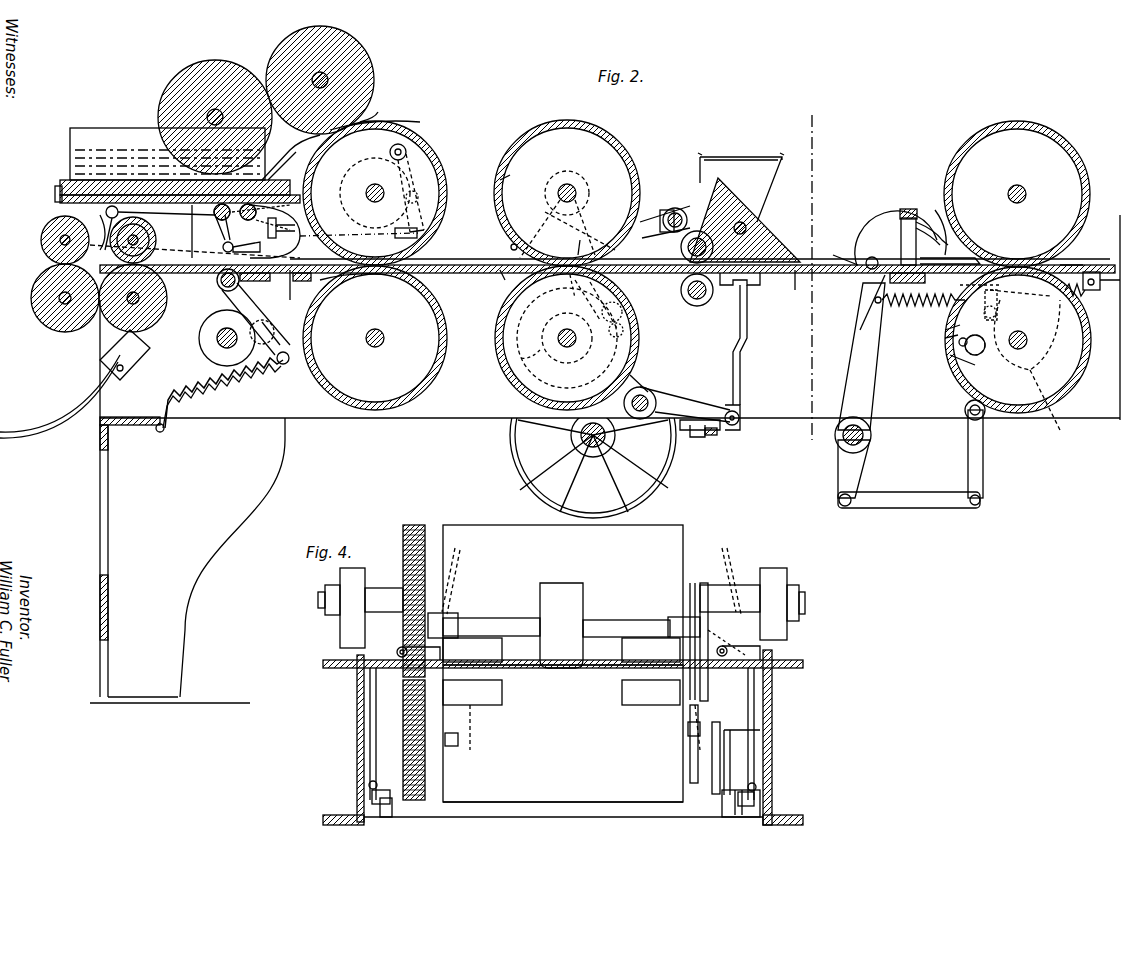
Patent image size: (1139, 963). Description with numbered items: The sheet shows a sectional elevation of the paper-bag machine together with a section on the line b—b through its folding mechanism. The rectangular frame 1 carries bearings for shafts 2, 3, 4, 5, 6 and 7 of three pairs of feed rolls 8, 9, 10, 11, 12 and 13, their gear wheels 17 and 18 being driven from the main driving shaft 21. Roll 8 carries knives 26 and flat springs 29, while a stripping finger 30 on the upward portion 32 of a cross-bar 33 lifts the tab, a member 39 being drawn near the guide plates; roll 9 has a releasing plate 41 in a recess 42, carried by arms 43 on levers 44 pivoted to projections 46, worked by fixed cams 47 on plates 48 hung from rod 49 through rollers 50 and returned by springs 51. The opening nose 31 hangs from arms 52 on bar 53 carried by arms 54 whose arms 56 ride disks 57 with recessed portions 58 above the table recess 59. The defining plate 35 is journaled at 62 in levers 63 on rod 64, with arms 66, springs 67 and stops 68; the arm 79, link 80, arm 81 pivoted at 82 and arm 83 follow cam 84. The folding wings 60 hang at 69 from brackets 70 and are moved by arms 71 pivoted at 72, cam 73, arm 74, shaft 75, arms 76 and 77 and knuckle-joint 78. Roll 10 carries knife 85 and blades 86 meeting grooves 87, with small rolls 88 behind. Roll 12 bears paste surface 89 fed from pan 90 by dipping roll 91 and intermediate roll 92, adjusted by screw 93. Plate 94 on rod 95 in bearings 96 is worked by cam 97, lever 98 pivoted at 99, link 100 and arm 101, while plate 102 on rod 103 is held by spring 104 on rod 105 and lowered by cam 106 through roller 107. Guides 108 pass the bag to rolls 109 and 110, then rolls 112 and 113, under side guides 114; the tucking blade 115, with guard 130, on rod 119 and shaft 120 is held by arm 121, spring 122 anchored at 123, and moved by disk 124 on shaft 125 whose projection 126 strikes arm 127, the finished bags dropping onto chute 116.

In FIG. 2, the frame 1 is at (300, 405).
In FIG. 2, the shaft 2 is at (1026, 194).
In FIG. 2, the shaft 3 is at (1026, 338).
In FIG. 2, the shaft 4 is at (558, 193).
In FIG. 4, the shaft 4 is at (561, 608).
In FIG. 2, the shaft 5 is at (558, 338).
In FIG. 4, the shaft 5 is at (458, 740).
In FIG. 2, the shaft 6 is at (366, 193).
In FIG. 2, the shaft 7 is at (366, 338).
In FIG. 2, the feed roll 8 is at (1021, 194).
In FIG. 2, the feed roll 9 is at (1090, 348).
In FIG. 2, the feed roll 10 is at (600, 138).
In FIG. 4, the feed roll 10 is at (563, 595).
In FIG. 2, the feed roll 11 is at (637, 338).
In FIG. 4, the feed roll 11 is at (563, 733).
In FIG. 2, the feed roll 12 is at (405, 126).
In FIG. 2, the feed roll 13 is at (445, 333).
In FIG. 4, the gear wheel 17 is at (415, 526).
In FIG. 4, the gear wheel 18 is at (426, 773).
In FIG. 2, the main driving shaft 21 is at (612, 450).
In FIG. 2, the knives 26 is at (898, 385).
In FIG. 2, the flat springs 29 is at (950, 225).
In FIG. 2, the stripping finger 30 is at (966, 216).
In FIG. 2, the opening nose 31 is at (765, 210).
In FIG. 4, the opening nose 31 is at (561, 625).
In FIG. 2, the upwardly extending portion 32 is at (906, 202).
In FIG. 2, the cross-bar 33 is at (900, 241).
In FIG. 2, the defining plate 35 is at (840, 247).
In FIG. 2, the plate 39 is at (950, 252).
In FIG. 2, the releasing plate 41 is at (945, 330).
In FIG. 2, the recess 42 is at (945, 338).
In FIG. 2, the arms 43 is at (959, 344).
In FIG. 2, the levers 44 is at (998, 300).
In FIG. 2, the projections 46 is at (1004, 312).
In FIG. 2, the fixed cams 47 is at (1045, 298).
In FIG. 2, the plates 48 is at (1062, 262).
In FIG. 2, the rod 49 is at (1100, 290).
In FIG. 2, the rollers 50 is at (993, 283).
In FIG. 2, the springs 51 is at (973, 337).
In FIG. 2, the arms 52 is at (676, 212).
In FIG. 4, the arms 52 is at (430, 624).
In FIG. 2, the bar 53 is at (674, 210).
In FIG. 4, the bar 53 is at (622, 622).
In FIG. 2, the arms 54 is at (663, 218).
In FIG. 4, the arms 54 is at (704, 586).
In FIG. 2, the arms 56 is at (512, 247).
In FIG. 4, the arms 56 is at (710, 636).
In FIG. 2, the disks 57 is at (532, 350).
In FIG. 4, the disks 57 is at (690, 760).
In FIG. 2, the recessed portions 58 is at (648, 368).
In FIG. 2, the recess 59 is at (791, 283).
In FIG. 2, the folding wings 60 is at (738, 200).
In FIG. 4, the folding wings 60 is at (458, 566).
In FIG. 2, the journal 62 is at (872, 238).
In FIG. 2, the levers 63 is at (861, 390).
In FIG. 2, the shaft or rod 64 is at (866, 436).
In FIG. 2, the arms 66 is at (882, 280).
In FIG. 2, the springs 67 is at (902, 304).
In FIG. 2, the fixed stops 68 is at (925, 280).
In FIG. 4, the pivot 69 is at (400, 650).
In FIG. 4, the brackets 70 is at (330, 652).
In FIG. 2, the arms 71 is at (738, 338).
In FIG. 4, the arms 71 is at (370, 738).
In FIG. 2, the pivot 72 is at (720, 280).
In FIG. 2, the cam 73 is at (614, 340).
In FIG. 4, the cam 73 is at (715, 770).
In FIG. 2, the arm 74 is at (647, 390).
In FIG. 4, the arm 74 is at (712, 785).
In FIG. 2, the shaft 75 is at (680, 400).
In FIG. 4, the shaft 75 is at (603, 802).
In FIG. 2, the arm 76 is at (695, 430).
In FIG. 4, the arm 76 is at (735, 817).
In FIG. 4, the arm 77 is at (392, 816).
In FIG. 2, the knuckle-joint 78 is at (740, 422).
In FIG. 4, the knuckle-joint 78 is at (778, 796).
In FIG. 2, the arm 79 is at (842, 475).
In FIG. 2, the link 80 is at (918, 506).
In FIG. 2, the arm 81 is at (975, 468).
In FIG. 2, the pivot 82 is at (965, 410).
In FIG. 2, the arm 83 is at (960, 369).
In FIG. 2, the cam 84 is at (1053, 405).
In FIG. 2, the knife 85 is at (500, 180).
In FIG. 2, the blades 86 is at (580, 252).
In FIG. 2, the grooves 87 is at (503, 286).
In FIG. 2, the small rolls 88 is at (680, 250).
In FIG. 4, the small rolls 88 is at (561, 671).
In FIG. 2, the horseshoe-shaped engaging surface 89 is at (415, 121).
In FIG. 2, the paste pan 90 is at (180, 165).
In FIG. 2, the dipping roll 91 is at (158, 113).
In FIG. 2, the intermediate roll 92 is at (372, 86).
In FIG. 2, the screw 93 is at (58, 203).
In FIG. 2, the plate 94 is at (287, 285).
In FIG. 2, the rod 95 is at (211, 231).
In FIG. 2, the bearings 96 is at (171, 216).
In FIG. 2, the cam 97 is at (420, 175).
In FIG. 2, the lever 98 is at (420, 222).
In FIG. 2, the pivot 99 is at (406, 152).
In FIG. 2, the link 100 is at (289, 233).
In FIG. 2, the arm 101 is at (232, 247).
In FIG. 2, the plate 102 is at (303, 281).
In FIG. 2, the rod 103 is at (261, 216).
In FIG. 2, the spring 104 is at (291, 164).
In FIG. 2, the rod 105 is at (260, 282).
In FIG. 2, the cam or projection 106 is at (372, 118).
In FIG. 2, the roller 107 is at (318, 232).
In FIG. 2, the guides 108 is at (213, 280).
In FIG. 2, the roll 109 is at (186, 244).
In FIG. 2, the roll 110 is at (167, 298).
In FIG. 2, the roll 112 is at (41, 240).
In FIG. 2, the roll 113 is at (31, 298).
In FIG. 2, the side guides 114 is at (350, 284).
In FIG. 2, the tucking blade 115 is at (118, 255).
In FIG. 2, the delivery chute 116 is at (52, 410).
In FIG. 2, the rod 119 is at (155, 224).
In FIG. 2, the rod or shaft 120 is at (222, 290).
In FIG. 2, the arm 121 is at (280, 324).
In FIG. 2, the spring 122 is at (223, 393).
In FIG. 2, the anchor 123 is at (158, 432).
In FIG. 2, the disk 124 is at (200, 344).
In FIG. 2, the shaft 125 is at (229, 347).
In FIG. 2, the cam or projection 126 is at (280, 364).
In FIG. 2, the arm 127 is at (275, 333).
In FIG. 2, the guard 130 is at (100, 218).
In FIG. 2, the section line b is at (811, 280).